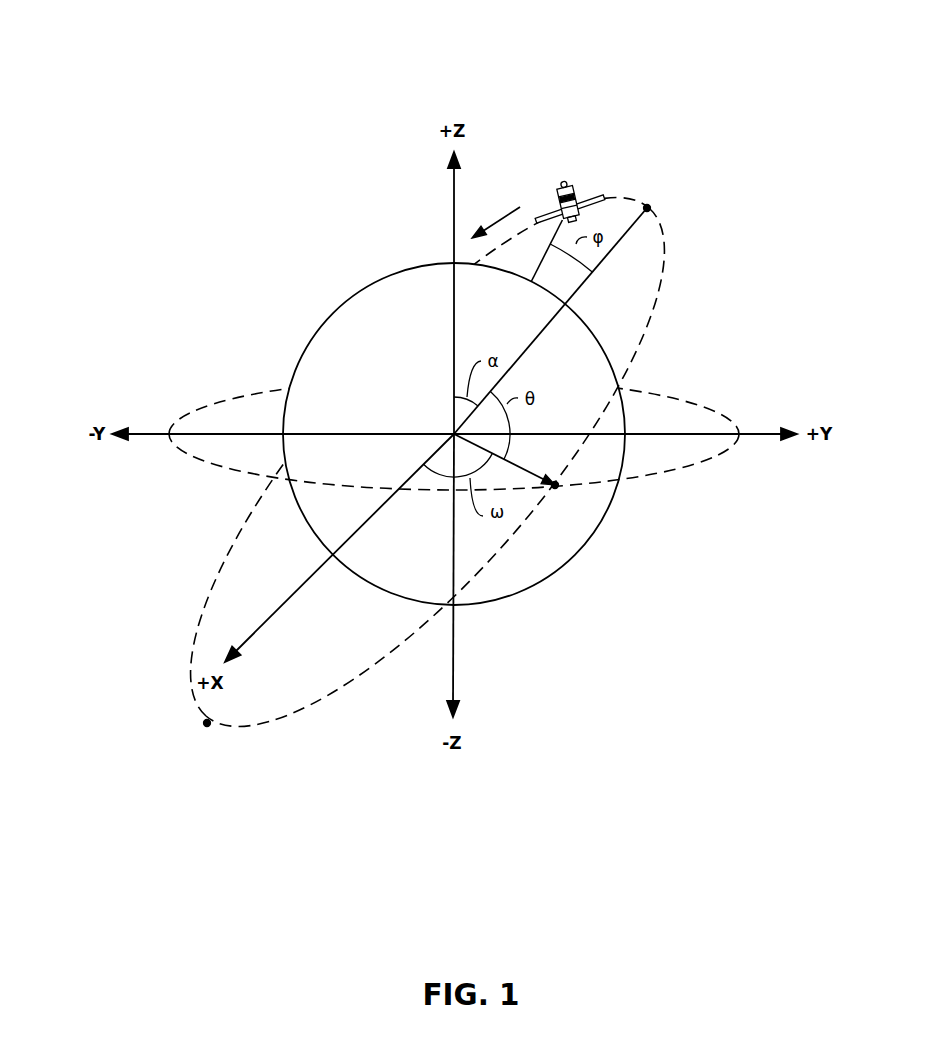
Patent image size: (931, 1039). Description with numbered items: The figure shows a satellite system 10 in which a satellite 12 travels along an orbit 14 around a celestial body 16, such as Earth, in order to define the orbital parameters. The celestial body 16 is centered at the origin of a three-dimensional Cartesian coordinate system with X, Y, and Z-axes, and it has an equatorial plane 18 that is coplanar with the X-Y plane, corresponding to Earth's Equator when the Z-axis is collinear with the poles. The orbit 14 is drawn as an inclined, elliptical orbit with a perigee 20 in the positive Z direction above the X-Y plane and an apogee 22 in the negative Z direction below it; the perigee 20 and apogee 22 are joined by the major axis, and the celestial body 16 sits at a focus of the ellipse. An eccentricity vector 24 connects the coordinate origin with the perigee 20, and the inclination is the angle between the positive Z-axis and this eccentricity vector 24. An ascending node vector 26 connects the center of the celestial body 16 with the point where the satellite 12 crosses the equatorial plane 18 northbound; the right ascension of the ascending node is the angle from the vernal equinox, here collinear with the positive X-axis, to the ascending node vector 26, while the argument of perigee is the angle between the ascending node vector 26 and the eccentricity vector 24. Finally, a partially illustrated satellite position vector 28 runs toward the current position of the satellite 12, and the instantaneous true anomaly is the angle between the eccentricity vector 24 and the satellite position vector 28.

The satellite system 10 is at (758, 53).
The satellite 12 is at (556, 192).
The orbit 14 is at (664, 246).
The celestial body 16 is at (454, 434).
The equatorial plane 18 is at (668, 474).
The perigee 20 is at (658, 197).
The apogee 22 is at (197, 733).
The eccentricity vector 24 is at (585, 289).
The ascending node vector 26 is at (516, 461).
The satellite position vector 28 is at (535, 272).